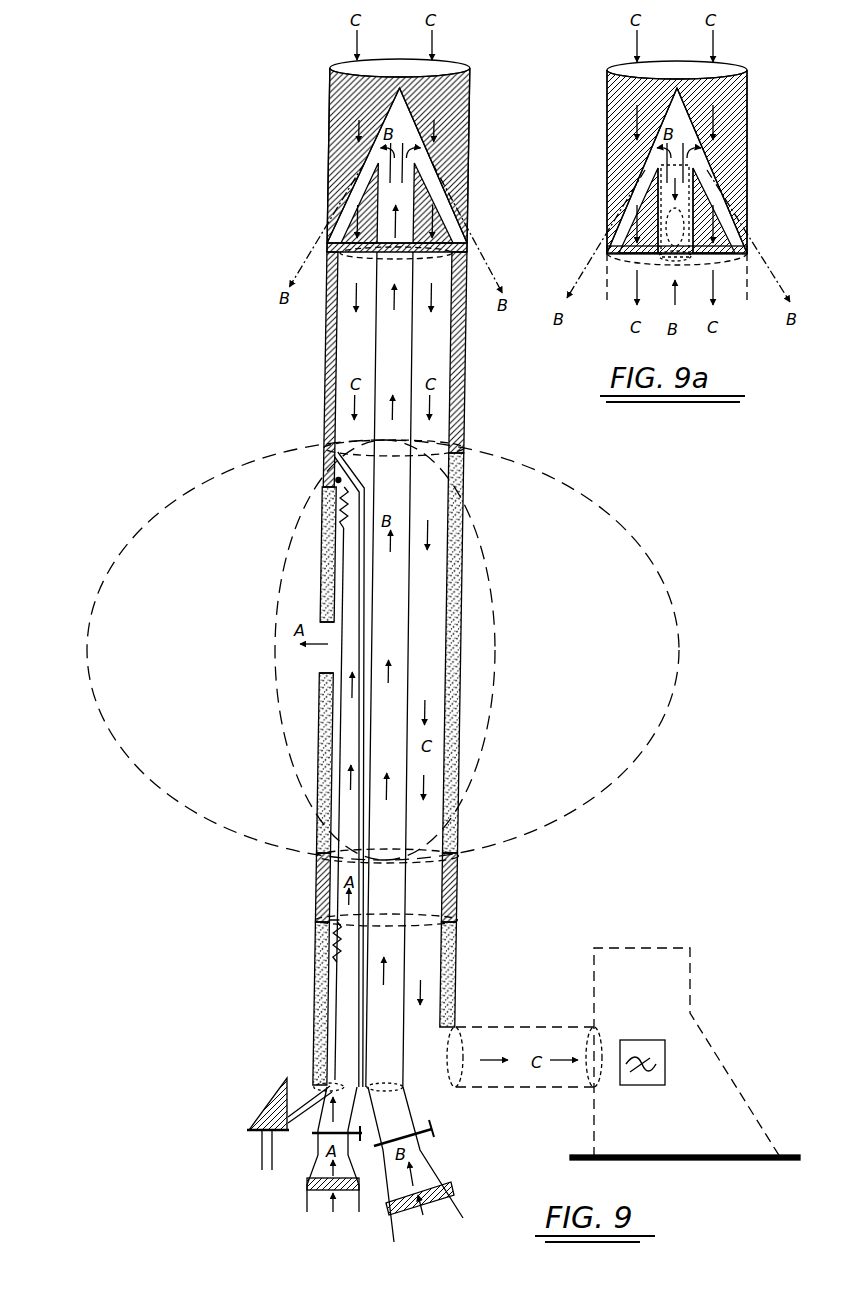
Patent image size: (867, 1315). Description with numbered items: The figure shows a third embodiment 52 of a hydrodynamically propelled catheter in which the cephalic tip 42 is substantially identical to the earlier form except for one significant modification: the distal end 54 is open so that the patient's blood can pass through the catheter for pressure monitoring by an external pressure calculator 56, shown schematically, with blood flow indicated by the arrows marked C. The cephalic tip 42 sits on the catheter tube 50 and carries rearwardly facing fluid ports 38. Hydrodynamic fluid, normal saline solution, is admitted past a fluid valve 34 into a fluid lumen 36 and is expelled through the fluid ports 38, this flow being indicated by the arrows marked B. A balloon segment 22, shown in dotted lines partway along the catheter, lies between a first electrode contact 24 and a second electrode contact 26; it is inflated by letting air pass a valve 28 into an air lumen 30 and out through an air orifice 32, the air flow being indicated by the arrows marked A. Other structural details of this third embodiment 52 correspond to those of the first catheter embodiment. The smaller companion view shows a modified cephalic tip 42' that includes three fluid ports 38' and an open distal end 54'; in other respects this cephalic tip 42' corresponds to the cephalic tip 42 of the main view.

In FIG. 9, the balloon segment 22 is at (500, 552).
In FIG. 9, the first electrode contact 24 is at (340, 481).
In FIG. 9, the second electrode contact 26 is at (346, 921).
In FIG. 9, the valve 28 is at (311, 1135).
In FIG. 9, the air lumen 30 is at (352, 727).
In FIG. 9, the air orifice 32 is at (328, 662).
In FIG. 9, the fluid valve 34 is at (441, 1136).
In FIG. 9, the fluid lumen 36 is at (402, 674).
In FIG. 9, the fluid ports 38 is at (395, 218).
In FIG. 9, the cephalic tip 42 is at (368, 160).
In FIG. 9, the catheter tube 50 is at (326, 352).
In FIG. 9, the third embodiment 52 is at (303, 165).
In FIG. 9, the distal end 54 is at (377, 52).
In FIG. 9, the external pressure calculator 56 is at (692, 950).
In FIG. 9a, the fluid ports 38' is at (672, 222).
In FIG. 9a, the cephalic tip 42' is at (645, 162).
In FIG. 9a, the distal end 54' is at (660, 52).